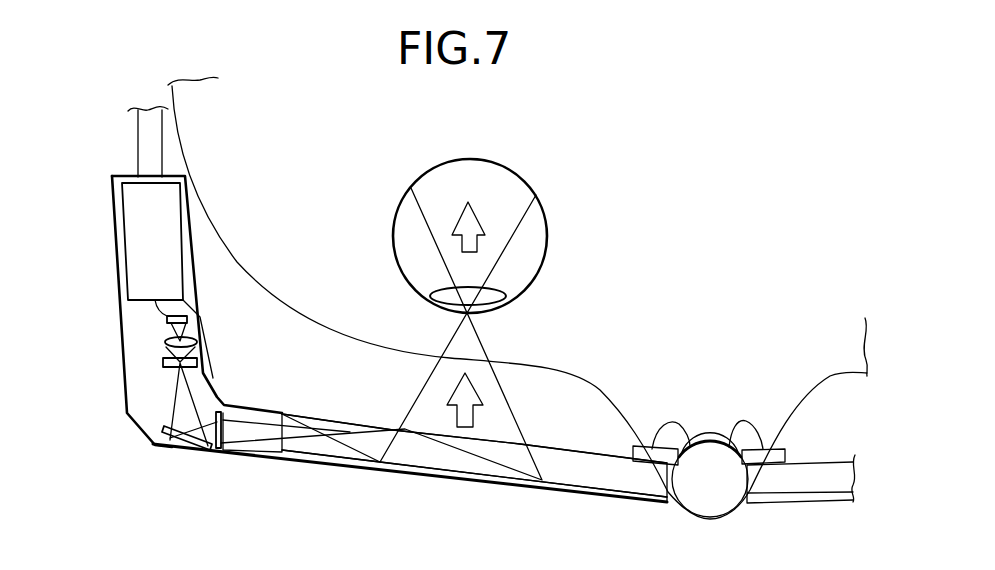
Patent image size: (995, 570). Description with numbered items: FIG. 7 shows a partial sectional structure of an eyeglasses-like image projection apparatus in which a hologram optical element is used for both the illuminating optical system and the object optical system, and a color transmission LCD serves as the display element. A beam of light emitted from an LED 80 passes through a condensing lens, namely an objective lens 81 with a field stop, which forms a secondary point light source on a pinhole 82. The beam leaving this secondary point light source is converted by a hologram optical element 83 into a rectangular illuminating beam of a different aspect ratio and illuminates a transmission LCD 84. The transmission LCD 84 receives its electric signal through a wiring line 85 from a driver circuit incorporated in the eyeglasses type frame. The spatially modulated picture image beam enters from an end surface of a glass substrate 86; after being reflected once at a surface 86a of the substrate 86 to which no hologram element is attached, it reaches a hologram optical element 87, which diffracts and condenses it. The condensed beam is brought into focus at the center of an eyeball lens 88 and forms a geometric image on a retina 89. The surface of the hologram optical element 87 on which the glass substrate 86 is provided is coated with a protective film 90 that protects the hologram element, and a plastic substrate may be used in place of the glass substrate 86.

The LED 80 is at (188, 318).
The objective lens 81 is at (197, 342).
The pinhole 82 is at (163, 362).
The hologram optical element 83 is at (177, 444).
The transmission LCD 84 is at (218, 449).
The wiring line 85 is at (213, 378).
The glass substrate 86 is at (620, 488).
The surface of the substrate 86a is at (350, 428).
The hologram optical element 87 is at (500, 478).
The eyeball lens 88 is at (428, 290).
The retina 89 is at (470, 158).
The protective film 90 is at (325, 463).